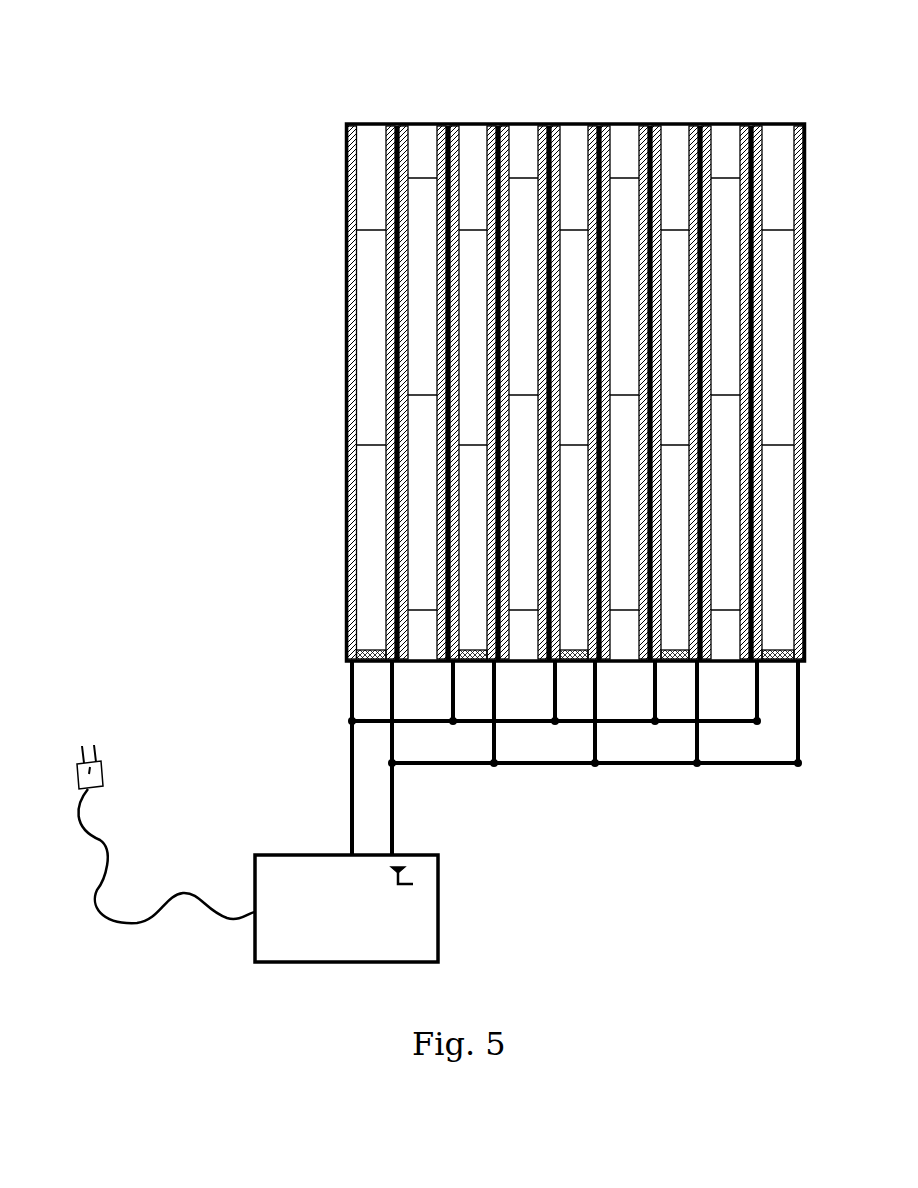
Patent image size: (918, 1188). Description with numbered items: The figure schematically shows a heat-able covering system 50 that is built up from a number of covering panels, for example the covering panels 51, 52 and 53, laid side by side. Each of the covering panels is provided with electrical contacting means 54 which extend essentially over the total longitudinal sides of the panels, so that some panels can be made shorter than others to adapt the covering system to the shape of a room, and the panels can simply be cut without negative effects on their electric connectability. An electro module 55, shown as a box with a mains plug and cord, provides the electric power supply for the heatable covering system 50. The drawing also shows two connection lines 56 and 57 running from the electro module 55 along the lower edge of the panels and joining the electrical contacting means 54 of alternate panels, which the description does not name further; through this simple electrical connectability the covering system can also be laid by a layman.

The heat-able covering system 50 is at (706, 110).
The covering panel 51 is at (372, 192).
The covering panel 52 is at (368, 319).
The covering panel 53 is at (372, 503).
The electrical contacting means 54 is at (348, 139).
The electro module 55 is at (273, 882).
The first bus wire 56 is at (350, 713).
The second bus wire 57 is at (395, 806).